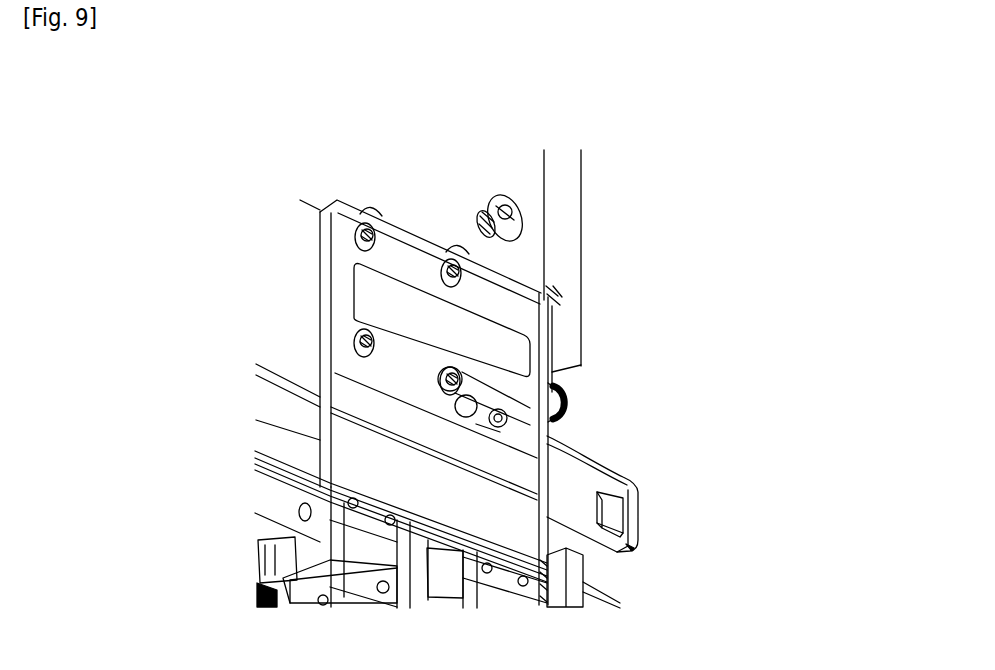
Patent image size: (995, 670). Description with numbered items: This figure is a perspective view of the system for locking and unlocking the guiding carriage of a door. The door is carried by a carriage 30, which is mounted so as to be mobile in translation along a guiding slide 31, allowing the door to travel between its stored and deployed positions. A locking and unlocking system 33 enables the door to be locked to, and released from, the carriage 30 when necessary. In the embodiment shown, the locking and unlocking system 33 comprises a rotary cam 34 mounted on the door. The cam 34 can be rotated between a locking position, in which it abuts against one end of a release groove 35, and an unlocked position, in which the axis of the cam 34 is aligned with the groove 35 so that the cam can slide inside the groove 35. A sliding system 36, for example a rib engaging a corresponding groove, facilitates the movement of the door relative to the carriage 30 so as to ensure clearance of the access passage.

The carriage 30 is at (343, 300).
The guiding slide 31 is at (597, 581).
The locking and unlocking system 33 is at (575, 411).
The rotary cam 34 is at (497, 412).
The release groove 35 is at (555, 463).
The sliding system 36 is at (550, 297).